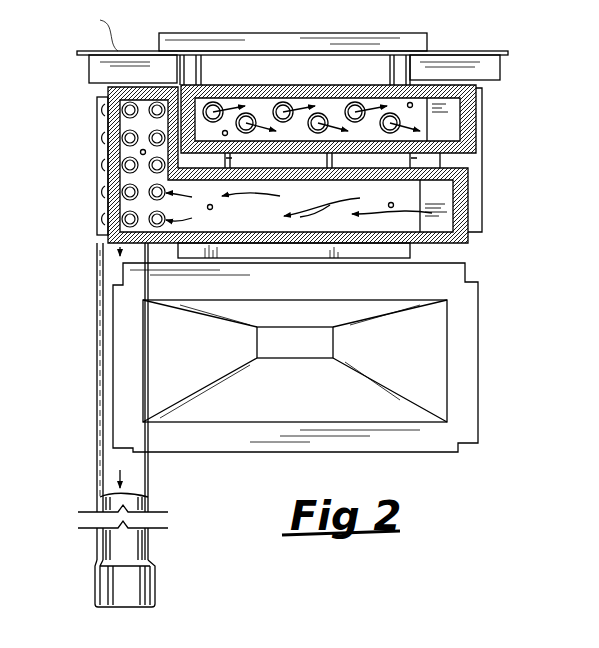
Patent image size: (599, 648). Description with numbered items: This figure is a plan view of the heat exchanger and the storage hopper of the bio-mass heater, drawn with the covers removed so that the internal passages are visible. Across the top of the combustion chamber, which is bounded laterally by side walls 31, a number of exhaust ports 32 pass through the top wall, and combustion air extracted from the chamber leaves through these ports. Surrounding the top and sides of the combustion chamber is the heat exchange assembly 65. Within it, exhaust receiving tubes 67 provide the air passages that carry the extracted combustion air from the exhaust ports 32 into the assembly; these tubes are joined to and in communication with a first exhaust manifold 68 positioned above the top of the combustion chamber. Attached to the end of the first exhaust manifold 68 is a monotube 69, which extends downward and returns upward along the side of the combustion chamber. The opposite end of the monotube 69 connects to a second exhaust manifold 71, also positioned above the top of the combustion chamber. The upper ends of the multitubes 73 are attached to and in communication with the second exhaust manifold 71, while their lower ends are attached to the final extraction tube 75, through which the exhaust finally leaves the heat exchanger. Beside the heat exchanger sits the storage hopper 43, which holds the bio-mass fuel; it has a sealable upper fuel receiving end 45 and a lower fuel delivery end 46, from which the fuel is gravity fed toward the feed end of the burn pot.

The side walls 31 is at (117, 51).
The exhaust ports 32 is at (320, 119).
The storage hopper 43 is at (480, 333).
The upper fuel receiving end 45 is at (466, 378).
The lower fuel delivery end 46 is at (295, 361).
The heat exchange assembly 65 is at (484, 168).
The exhaust receiving tubes 67 is at (213, 112).
The first exhaust manifold 68 is at (415, 117).
The monotube 69 is at (484, 137).
The second exhaust manifold 71 is at (406, 215).
The multitubes 73 is at (123, 162).
The final extraction tube 75 is at (97, 228).